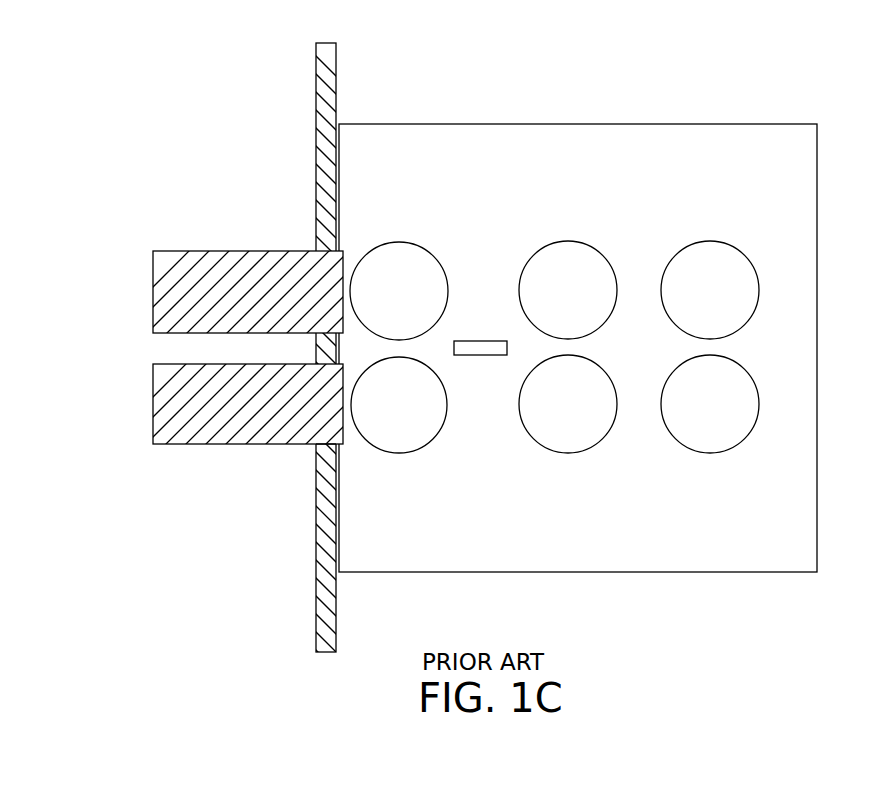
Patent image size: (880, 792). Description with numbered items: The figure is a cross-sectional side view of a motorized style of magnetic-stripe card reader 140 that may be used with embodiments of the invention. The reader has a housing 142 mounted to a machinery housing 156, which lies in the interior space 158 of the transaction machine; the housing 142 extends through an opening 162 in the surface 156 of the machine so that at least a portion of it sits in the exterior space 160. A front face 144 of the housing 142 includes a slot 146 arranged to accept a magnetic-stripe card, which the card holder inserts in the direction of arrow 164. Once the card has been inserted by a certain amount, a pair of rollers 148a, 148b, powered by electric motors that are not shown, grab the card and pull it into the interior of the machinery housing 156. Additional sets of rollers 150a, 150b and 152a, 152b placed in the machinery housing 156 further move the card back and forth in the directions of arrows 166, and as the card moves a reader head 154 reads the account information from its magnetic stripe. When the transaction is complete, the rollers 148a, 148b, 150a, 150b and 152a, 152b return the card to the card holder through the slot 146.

The magnetic-stripe card reader 140 is at (126, 76).
The housing 142 is at (250, 250).
The front face 144 is at (152, 440).
The slot 146 is at (158, 348).
The roller 148a is at (399, 249).
The roller 148b is at (398, 447).
The roller 150a is at (568, 249).
The roller 150b is at (567, 446).
The roller 152a is at (710, 249).
The roller 152b is at (709, 446).
The reader head 154 is at (480, 357).
The machinery housing 156 is at (578, 123).
The interior space 158 is at (508, 77).
The exterior space 160 is at (253, 69).
The opening 162 is at (316, 446).
The arrow 164 is at (116, 348).
The arrows 166 is at (511, 330).